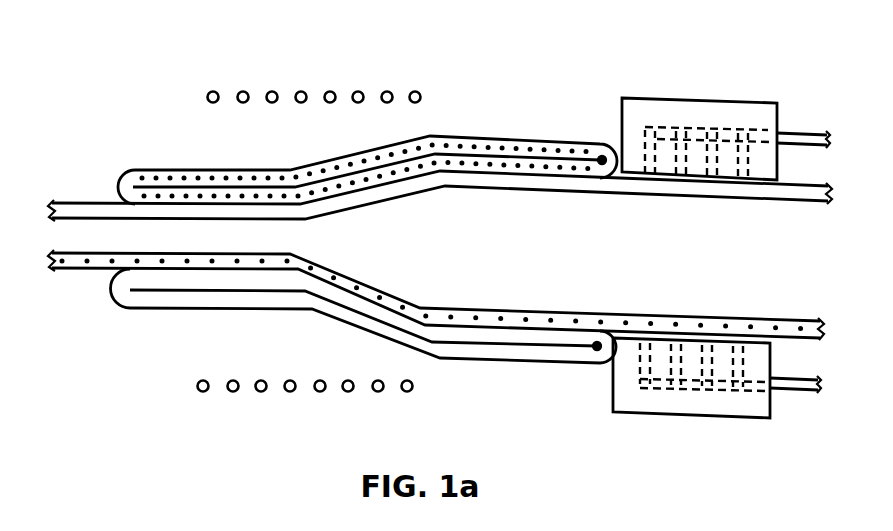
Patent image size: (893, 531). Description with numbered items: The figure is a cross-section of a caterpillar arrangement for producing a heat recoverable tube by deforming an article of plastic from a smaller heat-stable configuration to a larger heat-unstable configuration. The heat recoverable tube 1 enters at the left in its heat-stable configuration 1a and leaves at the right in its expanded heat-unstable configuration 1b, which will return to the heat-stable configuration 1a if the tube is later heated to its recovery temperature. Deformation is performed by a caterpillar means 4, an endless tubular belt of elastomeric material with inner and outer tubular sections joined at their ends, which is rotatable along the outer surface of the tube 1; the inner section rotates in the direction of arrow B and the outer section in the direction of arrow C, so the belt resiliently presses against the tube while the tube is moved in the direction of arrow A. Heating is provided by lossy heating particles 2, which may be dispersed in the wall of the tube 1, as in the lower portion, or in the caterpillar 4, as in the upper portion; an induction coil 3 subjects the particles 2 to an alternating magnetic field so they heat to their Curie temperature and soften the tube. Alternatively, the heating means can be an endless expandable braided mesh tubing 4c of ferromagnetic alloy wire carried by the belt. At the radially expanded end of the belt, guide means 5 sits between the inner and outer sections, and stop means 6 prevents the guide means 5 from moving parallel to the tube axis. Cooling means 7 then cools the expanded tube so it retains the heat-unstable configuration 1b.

The heat recoverable tube 1 is at (68, 278).
The heat-stable configuration 1a is at (78, 202).
The heat-unstable configuration 1b is at (760, 197).
The lossy heating particles 2 is at (163, 177).
The induction coil 3 is at (282, 88).
The caterpillar means 4 is at (478, 126).
The endless expandable braided mesh tubing 4c is at (525, 155).
The guide means 5 is at (601, 156).
The stop means 6 is at (723, 98).
The cooling means 7 is at (795, 387).
The arrow A is at (260, 243).
The arrow B is at (482, 333).
The arrow C is at (492, 352).